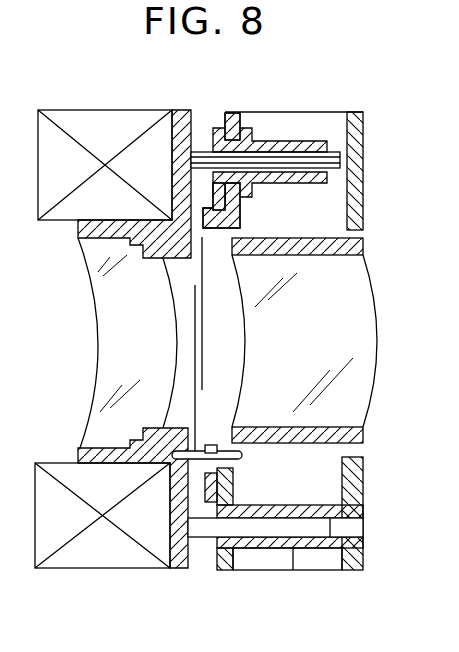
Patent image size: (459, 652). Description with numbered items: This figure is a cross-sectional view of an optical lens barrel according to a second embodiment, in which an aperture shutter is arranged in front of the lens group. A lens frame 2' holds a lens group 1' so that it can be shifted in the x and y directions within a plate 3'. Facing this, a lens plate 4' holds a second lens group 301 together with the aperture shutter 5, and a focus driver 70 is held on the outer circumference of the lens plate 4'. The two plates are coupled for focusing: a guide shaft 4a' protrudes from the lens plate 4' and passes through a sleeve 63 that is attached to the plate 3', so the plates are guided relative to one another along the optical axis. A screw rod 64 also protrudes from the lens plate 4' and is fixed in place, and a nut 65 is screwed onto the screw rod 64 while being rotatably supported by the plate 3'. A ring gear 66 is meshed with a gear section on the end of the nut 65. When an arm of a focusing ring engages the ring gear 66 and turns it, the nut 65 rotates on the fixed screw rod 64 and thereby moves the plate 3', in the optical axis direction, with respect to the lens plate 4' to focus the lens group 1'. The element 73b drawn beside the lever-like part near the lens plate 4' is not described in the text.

The lens group 1' is at (334, 341).
The lens frame 2' is at (325, 335).
The plate 3' is at (319, 171).
The lens plate 4' is at (134, 374).
The guide shaft 4a' is at (275, 581).
The aperture shutter 5 is at (178, 313).
The sleeve 63 is at (297, 570).
The screw rod 64 is at (337, 152).
The nut 65 is at (281, 141).
The ring gear 66 is at (214, 200).
The focus driver 70 is at (98, 570).
The lever 73b is at (242, 456).
The lens group 301 is at (92, 393).